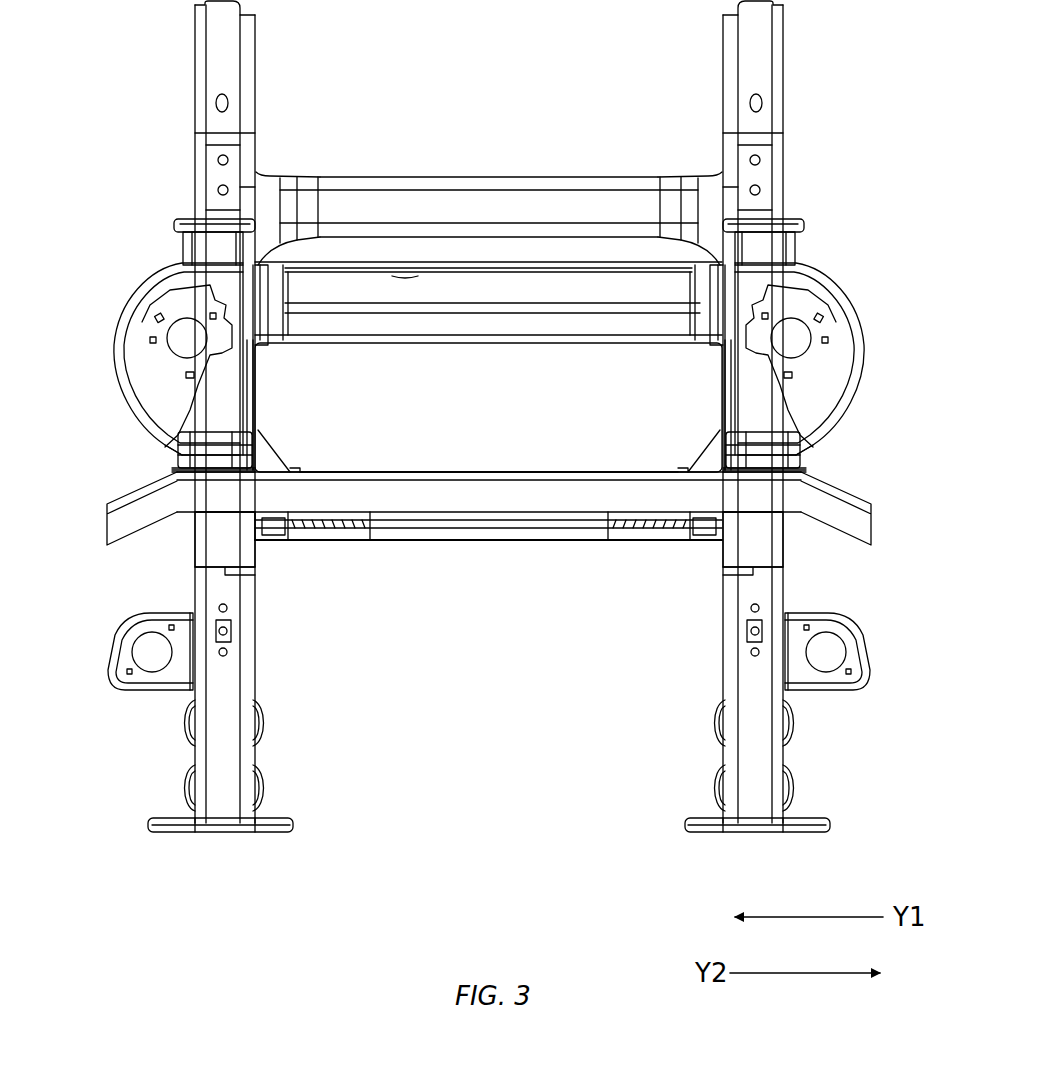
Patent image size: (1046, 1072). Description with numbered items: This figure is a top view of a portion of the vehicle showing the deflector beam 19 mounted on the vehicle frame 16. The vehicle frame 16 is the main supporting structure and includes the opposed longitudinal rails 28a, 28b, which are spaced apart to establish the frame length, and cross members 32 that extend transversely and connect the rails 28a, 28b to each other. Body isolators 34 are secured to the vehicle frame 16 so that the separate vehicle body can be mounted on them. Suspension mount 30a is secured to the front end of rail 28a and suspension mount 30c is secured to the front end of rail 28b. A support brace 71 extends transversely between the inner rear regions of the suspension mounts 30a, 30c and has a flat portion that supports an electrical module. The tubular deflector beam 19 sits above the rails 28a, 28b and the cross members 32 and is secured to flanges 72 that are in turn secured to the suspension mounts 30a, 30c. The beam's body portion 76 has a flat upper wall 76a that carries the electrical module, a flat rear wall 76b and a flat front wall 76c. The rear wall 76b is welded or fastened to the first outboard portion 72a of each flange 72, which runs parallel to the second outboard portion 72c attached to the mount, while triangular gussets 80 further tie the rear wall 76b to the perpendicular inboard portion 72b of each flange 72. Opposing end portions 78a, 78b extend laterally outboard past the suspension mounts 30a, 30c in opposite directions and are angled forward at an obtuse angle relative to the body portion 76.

The vehicle frame 16 is at (796, 81).
The deflector beam 19 is at (487, 550).
The longitudinal rail 28a is at (222, 550).
The longitudinal rail 28b is at (776, 550).
The suspension mount 30a is at (125, 258).
The suspension mount 30c is at (840, 256).
The cross member 32 is at (385, 205).
The body isolator 34 is at (143, 706).
The support brace 71 is at (592, 322).
The flange 72 is at (160, 458).
The first outboard portion 72a is at (227, 447).
The inboard portion 72b is at (250, 430).
The second outboard portion 72c is at (218, 432).
The body portion 76 is at (352, 500).
The upper wall 76a is at (547, 492).
The rear wall 76b is at (392, 472).
The front wall 76c is at (262, 515).
The end portion 78a is at (162, 496).
The end portion 78b is at (858, 503).
The gusset 80 is at (300, 446).